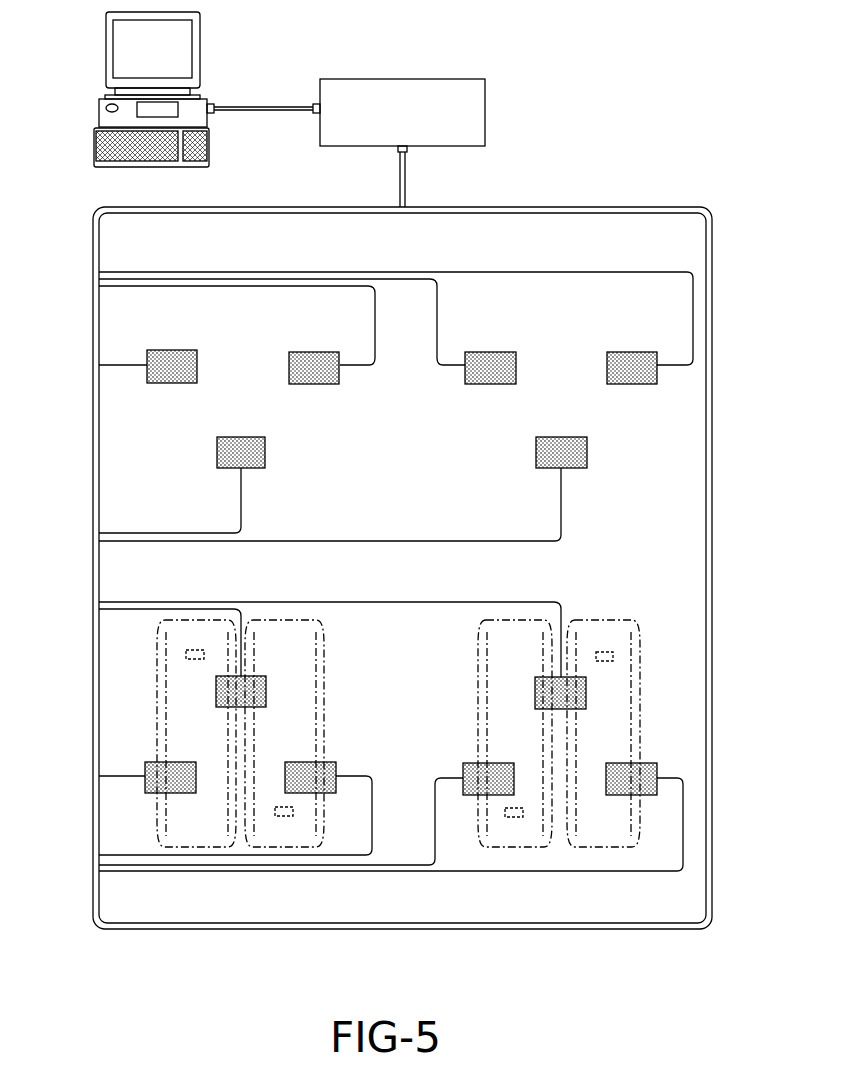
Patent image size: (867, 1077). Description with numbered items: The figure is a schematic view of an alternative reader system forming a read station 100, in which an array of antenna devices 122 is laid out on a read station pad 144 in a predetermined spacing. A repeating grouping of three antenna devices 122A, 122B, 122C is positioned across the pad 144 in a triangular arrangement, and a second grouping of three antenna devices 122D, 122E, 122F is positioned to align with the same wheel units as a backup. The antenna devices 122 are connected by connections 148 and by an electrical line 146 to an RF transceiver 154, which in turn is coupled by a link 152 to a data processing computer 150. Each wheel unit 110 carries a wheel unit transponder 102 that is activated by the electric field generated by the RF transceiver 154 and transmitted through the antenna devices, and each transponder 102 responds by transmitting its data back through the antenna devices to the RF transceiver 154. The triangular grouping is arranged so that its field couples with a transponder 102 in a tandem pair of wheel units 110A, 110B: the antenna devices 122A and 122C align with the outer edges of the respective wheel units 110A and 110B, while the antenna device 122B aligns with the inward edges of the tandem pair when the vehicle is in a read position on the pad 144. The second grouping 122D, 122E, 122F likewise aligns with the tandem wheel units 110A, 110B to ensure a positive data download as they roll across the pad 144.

The station 100 is at (642, 118).
The wheel unit transponder 102 is at (607, 655).
The wheel unit 110 is at (497, 620).
The wheel unit 110A is at (180, 843).
The wheel unit 110B is at (298, 843).
The antenna device 122 is at (635, 370).
The antenna device 122A is at (175, 780).
The antenna device 122B is at (220, 698).
The antenna device 122C is at (306, 778).
The antenna device 122D is at (170, 368).
The antenna device 122E is at (313, 368).
The antenna device 122F is at (245, 455).
The read station pad 144 is at (633, 900).
The electrical line 146 is at (405, 190).
The connections 148 is at (693, 312).
The data processing computer 150 is at (200, 46).
The data cable 152 is at (258, 113).
The RF transceiver 154 is at (390, 79).